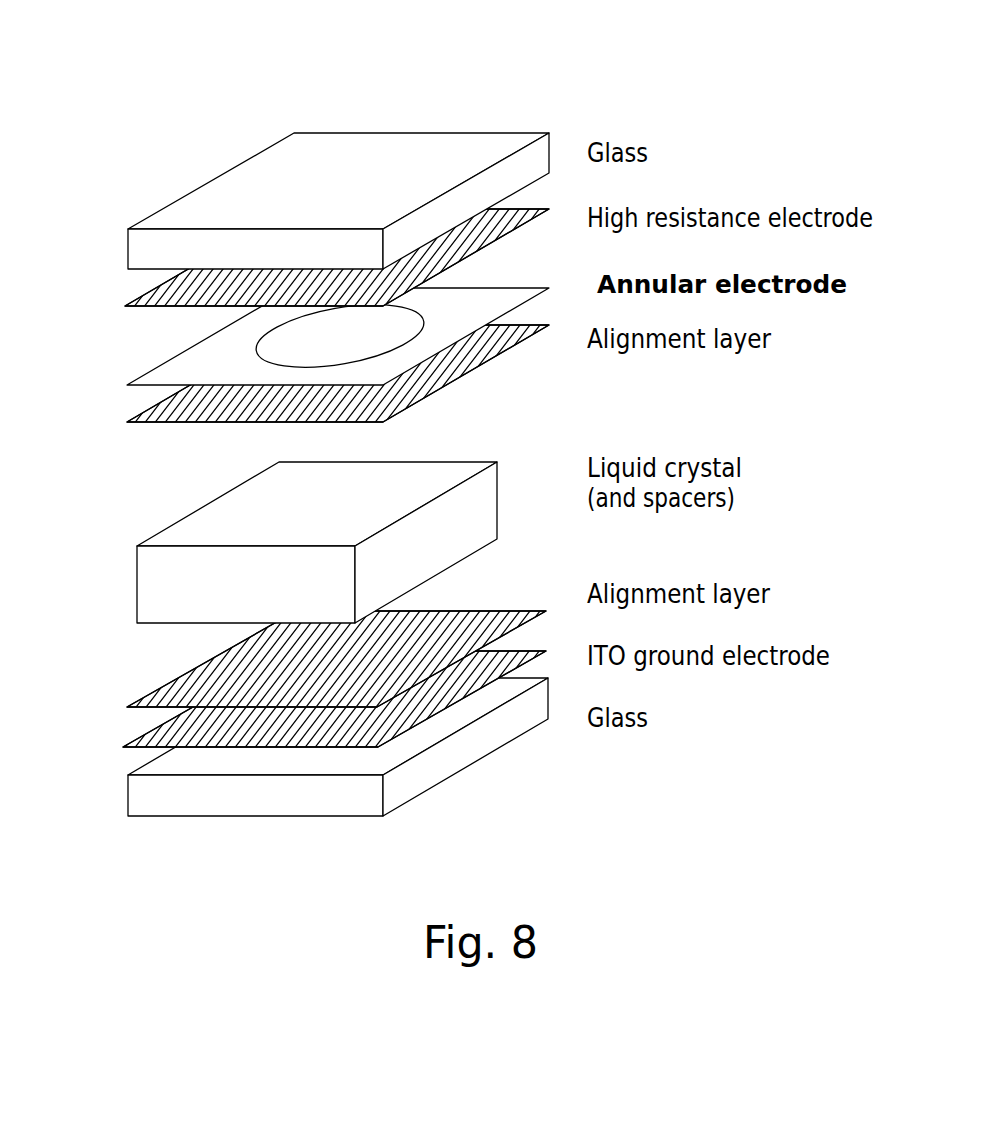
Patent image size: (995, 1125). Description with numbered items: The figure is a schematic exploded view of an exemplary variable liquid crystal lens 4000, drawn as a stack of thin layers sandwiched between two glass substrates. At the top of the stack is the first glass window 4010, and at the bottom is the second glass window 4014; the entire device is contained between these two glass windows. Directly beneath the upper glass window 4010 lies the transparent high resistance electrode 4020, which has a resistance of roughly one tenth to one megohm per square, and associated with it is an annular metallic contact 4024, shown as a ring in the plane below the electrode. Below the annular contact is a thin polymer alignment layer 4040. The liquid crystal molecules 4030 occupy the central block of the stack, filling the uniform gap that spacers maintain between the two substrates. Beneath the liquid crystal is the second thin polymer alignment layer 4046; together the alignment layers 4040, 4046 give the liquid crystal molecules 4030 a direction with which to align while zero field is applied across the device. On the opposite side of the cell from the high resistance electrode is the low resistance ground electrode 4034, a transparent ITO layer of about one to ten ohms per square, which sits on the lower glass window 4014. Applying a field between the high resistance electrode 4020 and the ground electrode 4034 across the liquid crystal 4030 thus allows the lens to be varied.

The liquid crystal lens assembly 4000 is at (532, 59).
The glass window 4010 is at (370, 143).
The high resistance electrode 4020 is at (497, 240).
The annular metallic contact 4024 is at (208, 332).
The alignment layer 4040 is at (448, 382).
The liquid crystal molecules 4030 is at (465, 462).
The alignment layer 4046 is at (485, 611).
The ground electrode 4034 is at (132, 740).
The glass window 4014 is at (425, 777).